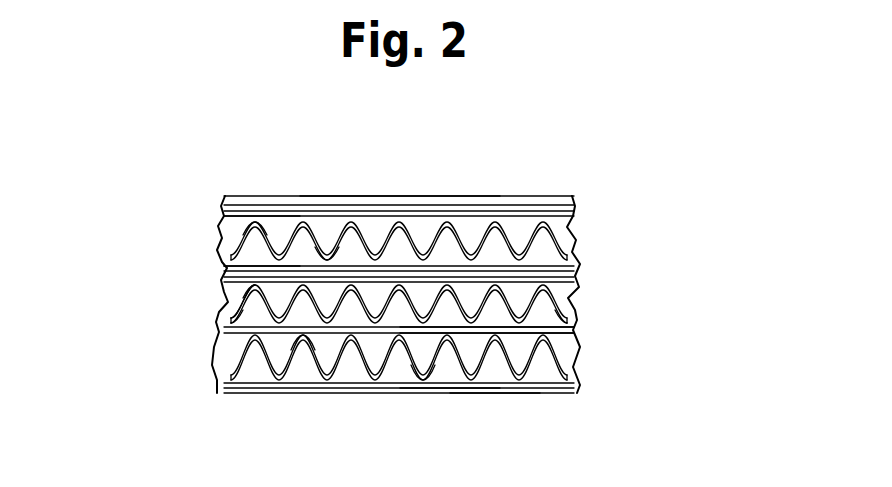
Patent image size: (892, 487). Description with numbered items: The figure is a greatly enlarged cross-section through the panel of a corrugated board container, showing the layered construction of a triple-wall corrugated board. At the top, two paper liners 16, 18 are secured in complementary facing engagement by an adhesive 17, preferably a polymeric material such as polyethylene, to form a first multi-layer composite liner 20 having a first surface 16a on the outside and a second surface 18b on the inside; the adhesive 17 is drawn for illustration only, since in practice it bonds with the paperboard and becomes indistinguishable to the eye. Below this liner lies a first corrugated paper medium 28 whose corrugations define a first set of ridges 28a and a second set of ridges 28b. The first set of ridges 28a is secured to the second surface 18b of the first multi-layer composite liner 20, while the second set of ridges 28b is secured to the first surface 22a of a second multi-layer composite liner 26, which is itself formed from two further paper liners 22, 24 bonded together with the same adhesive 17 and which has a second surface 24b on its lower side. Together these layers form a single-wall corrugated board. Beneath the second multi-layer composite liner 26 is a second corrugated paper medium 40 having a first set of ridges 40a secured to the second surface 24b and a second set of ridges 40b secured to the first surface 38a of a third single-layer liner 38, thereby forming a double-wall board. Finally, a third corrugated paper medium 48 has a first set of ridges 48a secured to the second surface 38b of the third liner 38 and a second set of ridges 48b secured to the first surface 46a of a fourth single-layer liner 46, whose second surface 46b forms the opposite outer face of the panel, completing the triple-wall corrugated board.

The first multi-layer composite liner 20 is at (223, 208).
The paper liner 16 is at (575, 200).
The first surface 16a is at (455, 197).
The adhesive 17 is at (575, 208).
The paper liner 18 is at (573, 217).
The second surface 18b is at (223, 228).
The first corrugated paper medium 28 is at (577, 237).
The first set of ridges 28a is at (266, 238).
The second set of ridges 28b is at (326, 252).
The second multi-layer composite liner 26 is at (220, 272).
The paper liner 22 is at (575, 273).
The first surface 22a is at (575, 267).
The paper liner 24 is at (578, 296).
The second surface 24b is at (580, 304).
The second corrugated paper medium 40 is at (218, 315).
The first set of ridges 40a is at (220, 287).
The second set of ridges 40b is at (216, 323).
The third single-layer liner 38 is at (218, 328).
The first surface 38a is at (578, 325).
The second surface 38b is at (577, 340).
The third corrugated paper medium 48 is at (215, 380).
The first set of ridges 48a is at (303, 338).
The second set of ridges 48b is at (420, 380).
The fourth single-layer liner 46 is at (573, 390).
The first surface 46a is at (447, 389).
The second surface 46b is at (492, 393).